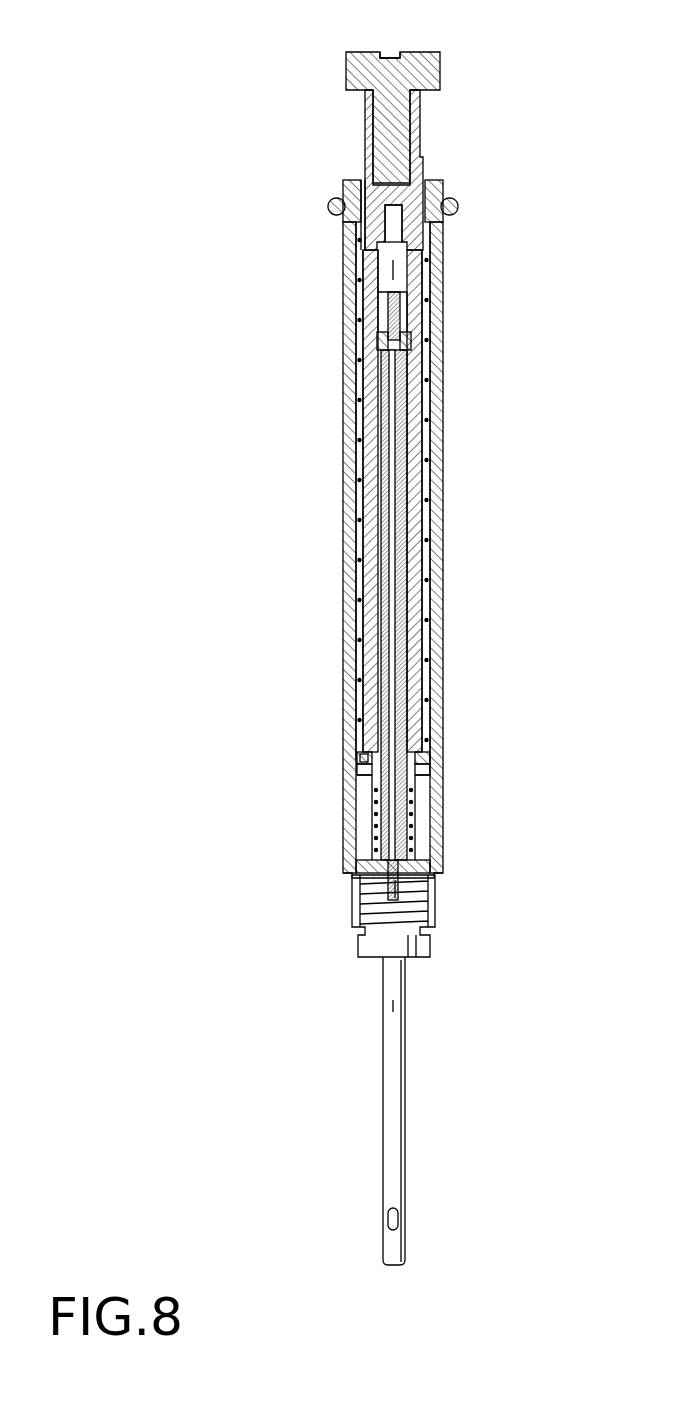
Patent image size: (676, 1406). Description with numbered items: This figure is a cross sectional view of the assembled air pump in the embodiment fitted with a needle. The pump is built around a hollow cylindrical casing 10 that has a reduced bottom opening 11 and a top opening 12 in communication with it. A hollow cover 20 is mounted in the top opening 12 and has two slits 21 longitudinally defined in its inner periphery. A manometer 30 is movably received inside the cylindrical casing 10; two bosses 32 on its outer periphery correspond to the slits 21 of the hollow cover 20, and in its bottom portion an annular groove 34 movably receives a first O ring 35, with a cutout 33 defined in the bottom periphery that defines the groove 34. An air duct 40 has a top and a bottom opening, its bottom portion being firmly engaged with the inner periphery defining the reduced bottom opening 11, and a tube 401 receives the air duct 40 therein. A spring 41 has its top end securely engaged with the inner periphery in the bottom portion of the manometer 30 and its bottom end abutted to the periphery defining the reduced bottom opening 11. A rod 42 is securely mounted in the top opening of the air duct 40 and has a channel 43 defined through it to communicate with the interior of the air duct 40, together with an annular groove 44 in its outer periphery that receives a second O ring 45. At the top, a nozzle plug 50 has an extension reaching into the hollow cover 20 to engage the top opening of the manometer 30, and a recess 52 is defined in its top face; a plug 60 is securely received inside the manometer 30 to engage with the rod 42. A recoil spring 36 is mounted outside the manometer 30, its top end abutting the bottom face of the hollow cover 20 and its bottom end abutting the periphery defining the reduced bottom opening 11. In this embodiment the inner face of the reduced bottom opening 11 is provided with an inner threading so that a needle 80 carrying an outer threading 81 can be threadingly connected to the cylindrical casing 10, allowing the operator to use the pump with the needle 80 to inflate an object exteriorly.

The cylindrical casing 10 is at (440, 520).
The reduced bottom opening 11 is at (428, 866).
The top opening 12 is at (433, 247).
The hollow cover 20 is at (344, 190).
The slits 21 is at (361, 243).
The manometer 30 is at (418, 655).
The bosses 32 is at (425, 165).
The cutout 33 is at (362, 775).
The groove 34 is at (426, 778).
The first O ring 35 is at (360, 760).
The recoil spring 36 is at (424, 438).
The air duct 40 is at (403, 488).
The tube 401 is at (407, 555).
The spring 41 is at (410, 815).
The rod 42 is at (408, 312).
The channel 43 is at (387, 306).
The annular groove 44 is at (383, 337).
The second O ring 45 is at (407, 345).
The nozzle plug 50 is at (440, 78).
The recess 52 is at (392, 53).
The plug 60 is at (410, 232).
The needle 80 is at (401, 1056).
The outer threading 81 is at (433, 905).